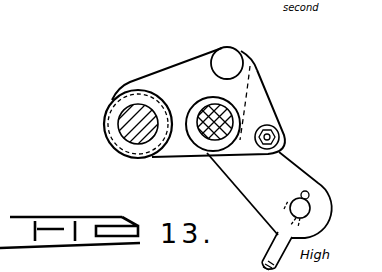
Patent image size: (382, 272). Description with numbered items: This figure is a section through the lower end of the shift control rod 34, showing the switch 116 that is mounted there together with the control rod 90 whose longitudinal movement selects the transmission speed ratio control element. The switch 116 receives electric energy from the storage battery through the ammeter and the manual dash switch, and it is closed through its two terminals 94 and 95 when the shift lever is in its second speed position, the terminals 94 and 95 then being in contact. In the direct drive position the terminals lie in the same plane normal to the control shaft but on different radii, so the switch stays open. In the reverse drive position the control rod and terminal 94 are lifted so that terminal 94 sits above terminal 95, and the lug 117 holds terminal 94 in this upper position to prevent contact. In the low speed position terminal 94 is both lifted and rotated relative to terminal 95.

The shift control rod 34 is at (282, 250).
The control rod 90 is at (208, 137).
The terminal 94 is at (280, 133).
The terminal 95 is at (230, 63).
The switch 116 is at (258, 107).
The lug 117 is at (172, 95).